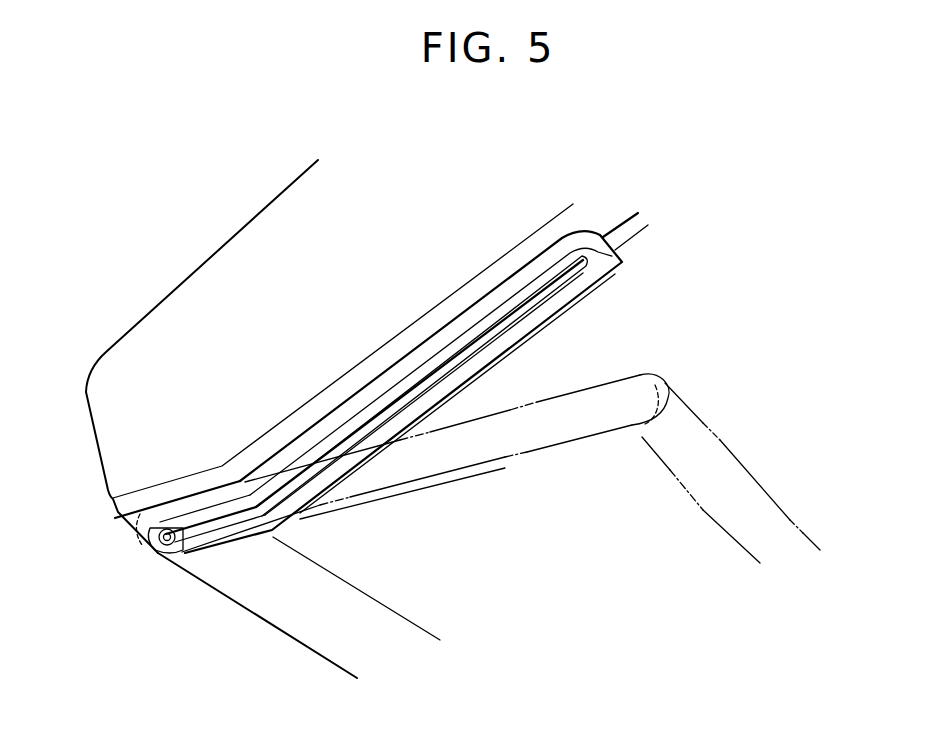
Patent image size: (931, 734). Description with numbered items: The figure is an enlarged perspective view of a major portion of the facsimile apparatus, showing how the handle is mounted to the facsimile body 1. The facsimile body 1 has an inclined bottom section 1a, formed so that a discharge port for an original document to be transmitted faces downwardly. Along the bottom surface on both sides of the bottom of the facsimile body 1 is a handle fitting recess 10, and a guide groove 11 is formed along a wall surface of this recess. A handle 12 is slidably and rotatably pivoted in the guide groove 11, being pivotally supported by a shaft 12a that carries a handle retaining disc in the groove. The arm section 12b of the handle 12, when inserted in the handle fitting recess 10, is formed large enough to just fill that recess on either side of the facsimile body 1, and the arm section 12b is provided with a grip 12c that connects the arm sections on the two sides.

The facsimile body 1 is at (237, 237).
The inclined bottom section 1a is at (292, 620).
The handle fitting recess 10 is at (618, 246).
The guide groove 11 is at (553, 292).
The handle 12 is at (575, 455).
The shaft 12a is at (167, 557).
The arm section 12b is at (486, 449).
The grip 12c is at (720, 493).